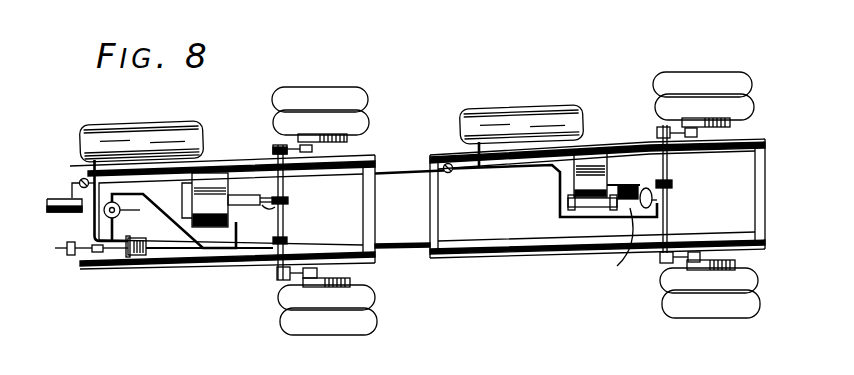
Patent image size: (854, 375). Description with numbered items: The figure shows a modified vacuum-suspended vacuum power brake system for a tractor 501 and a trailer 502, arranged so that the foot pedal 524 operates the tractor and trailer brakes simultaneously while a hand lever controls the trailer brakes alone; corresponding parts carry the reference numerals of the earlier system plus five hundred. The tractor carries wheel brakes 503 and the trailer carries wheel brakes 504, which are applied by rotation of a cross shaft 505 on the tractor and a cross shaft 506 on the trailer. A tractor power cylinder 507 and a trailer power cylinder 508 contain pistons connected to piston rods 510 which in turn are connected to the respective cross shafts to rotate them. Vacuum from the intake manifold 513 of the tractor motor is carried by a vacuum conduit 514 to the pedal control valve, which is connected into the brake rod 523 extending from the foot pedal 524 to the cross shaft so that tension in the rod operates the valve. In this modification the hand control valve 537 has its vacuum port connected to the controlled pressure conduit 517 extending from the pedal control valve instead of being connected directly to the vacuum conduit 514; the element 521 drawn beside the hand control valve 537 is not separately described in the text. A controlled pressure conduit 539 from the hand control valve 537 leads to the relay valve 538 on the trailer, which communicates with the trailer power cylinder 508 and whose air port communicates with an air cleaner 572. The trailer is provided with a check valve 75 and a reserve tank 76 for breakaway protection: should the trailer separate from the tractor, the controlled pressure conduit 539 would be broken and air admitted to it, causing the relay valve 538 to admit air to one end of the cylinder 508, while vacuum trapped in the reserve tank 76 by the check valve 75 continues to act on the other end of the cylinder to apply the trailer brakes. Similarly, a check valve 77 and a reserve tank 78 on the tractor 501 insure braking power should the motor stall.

The reserve tank 78 is at (160, 140).
The vacuum conduit 514 is at (118, 183).
The check valve 77 is at (80, 180).
The intake manifold 513 is at (51, 198).
The hand control valve 537 is at (104, 213).
The rod 521 is at (140, 221).
The tractor power cylinder 507 is at (203, 190).
The cross shaft 505 is at (285, 188).
The piston rod 510 is at (285, 205).
The wheel brakes 503 is at (345, 136).
The foot pedal 524 is at (70, 258).
The controlled pressure conduit 517 is at (117, 259).
The brake rod 523 is at (193, 251).
The tractor 501 is at (231, 272).
The controlled pressure conduit 539 is at (420, 250).
The trailer 502 is at (553, 285).
The reserve tank 76 is at (527, 122).
The check valve 75 is at (449, 174).
The trailer power cylinder 508 is at (587, 175).
The air cleaner 572 is at (628, 186).
The cross shaft 506 is at (660, 198).
The relay valve 538 is at (617, 244).
The wheel brakes 504 is at (731, 122).